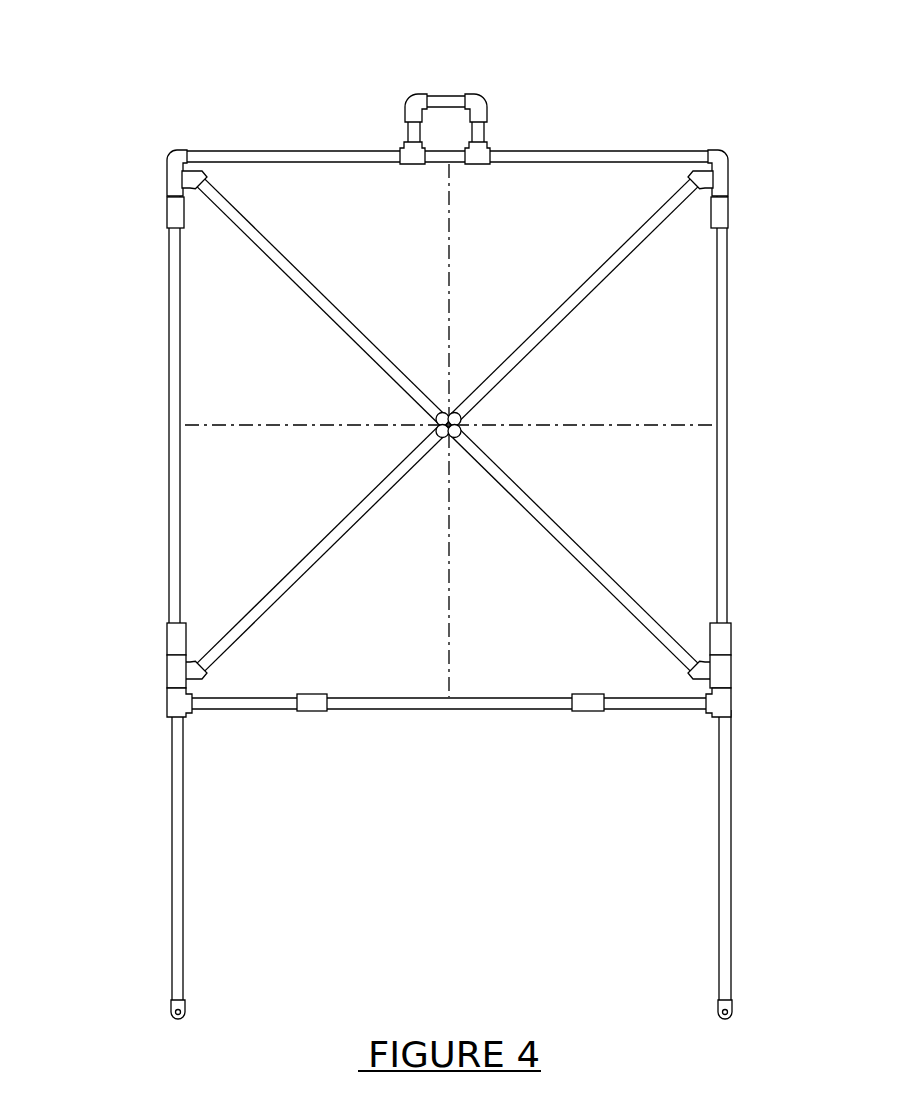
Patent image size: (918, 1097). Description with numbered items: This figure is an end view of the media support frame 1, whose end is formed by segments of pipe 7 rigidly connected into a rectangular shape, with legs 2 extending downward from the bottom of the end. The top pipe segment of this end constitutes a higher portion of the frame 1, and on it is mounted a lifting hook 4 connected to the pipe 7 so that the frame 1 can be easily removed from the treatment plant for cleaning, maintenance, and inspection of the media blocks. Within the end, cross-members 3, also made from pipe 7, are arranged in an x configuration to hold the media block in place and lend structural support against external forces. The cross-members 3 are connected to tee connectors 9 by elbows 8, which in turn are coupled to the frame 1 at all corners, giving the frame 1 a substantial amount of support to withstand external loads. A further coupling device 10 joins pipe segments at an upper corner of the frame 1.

The frame 1 is at (126, 410).
The legs 2 is at (778, 864).
The cross-members 3 is at (456, 380).
The lifting hooks 4 is at (489, 106).
The pipe 7 is at (447, 425).
The elbows 8 is at (217, 242).
The tee connectors 9 is at (127, 670).
The corner elbow fitting 10 is at (114, 137).